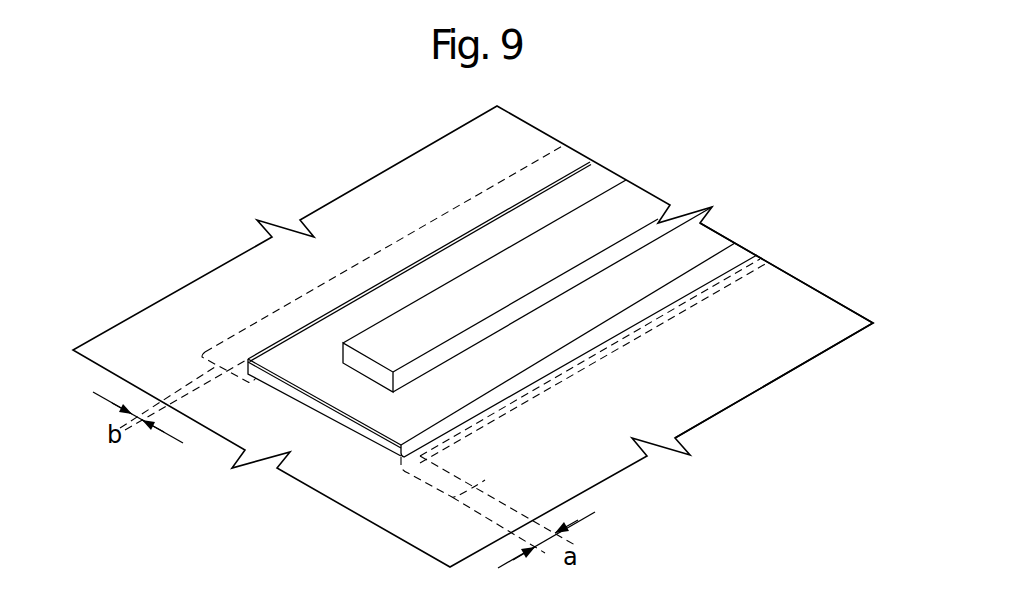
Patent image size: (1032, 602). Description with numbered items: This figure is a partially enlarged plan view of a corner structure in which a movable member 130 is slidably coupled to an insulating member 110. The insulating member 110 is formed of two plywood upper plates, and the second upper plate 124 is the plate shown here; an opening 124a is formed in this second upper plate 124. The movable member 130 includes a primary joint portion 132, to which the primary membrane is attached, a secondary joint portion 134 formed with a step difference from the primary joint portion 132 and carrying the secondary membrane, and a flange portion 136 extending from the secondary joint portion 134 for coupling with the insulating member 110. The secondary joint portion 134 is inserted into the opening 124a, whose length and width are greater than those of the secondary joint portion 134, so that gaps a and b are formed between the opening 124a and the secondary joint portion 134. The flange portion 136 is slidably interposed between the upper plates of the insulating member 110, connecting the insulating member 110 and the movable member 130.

The insulating member 110 is at (473, 336).
The second upper plate 124 is at (177, 290).
The opening 124a is at (707, 278).
The movable member 130 is at (612, 159).
The primary joint portion 132 is at (460, 312).
The secondary joint portion 134 is at (380, 415).
The flange portion 136 is at (703, 330).